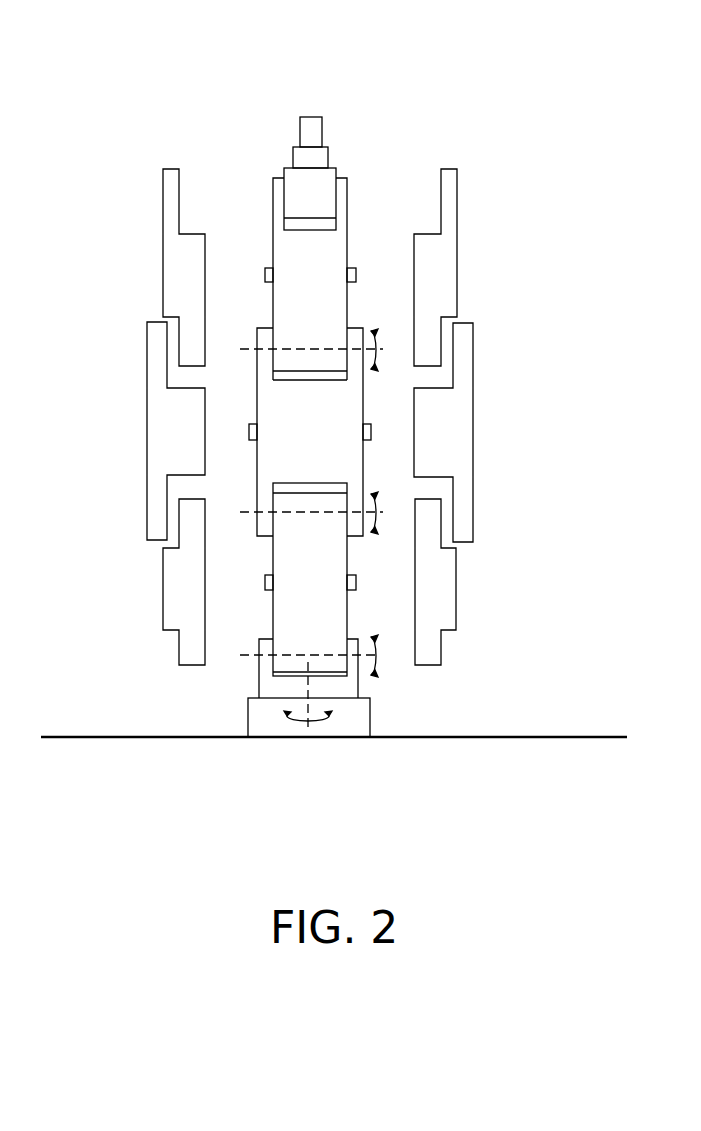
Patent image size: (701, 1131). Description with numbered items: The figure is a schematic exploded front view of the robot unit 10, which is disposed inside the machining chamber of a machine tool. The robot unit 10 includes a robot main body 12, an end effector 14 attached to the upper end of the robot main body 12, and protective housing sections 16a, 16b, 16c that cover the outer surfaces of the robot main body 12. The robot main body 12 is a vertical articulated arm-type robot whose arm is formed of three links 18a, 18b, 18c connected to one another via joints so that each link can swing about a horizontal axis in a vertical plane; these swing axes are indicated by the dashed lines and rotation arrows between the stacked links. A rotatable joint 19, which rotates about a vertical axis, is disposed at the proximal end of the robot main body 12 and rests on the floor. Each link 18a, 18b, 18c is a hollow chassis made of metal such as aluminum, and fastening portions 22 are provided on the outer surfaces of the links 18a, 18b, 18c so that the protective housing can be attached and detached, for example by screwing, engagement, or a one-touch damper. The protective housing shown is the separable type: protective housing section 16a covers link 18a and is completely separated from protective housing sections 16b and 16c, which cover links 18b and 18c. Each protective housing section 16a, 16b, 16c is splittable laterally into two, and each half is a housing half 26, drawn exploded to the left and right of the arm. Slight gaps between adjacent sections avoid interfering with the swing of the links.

The robot unit 10 is at (383, 93).
The robot main body 12 is at (275, 158).
The end effector 14 is at (323, 153).
The protective housing section 16a is at (164, 254).
The protective housing section 16b is at (150, 409).
The protective housing section 16c is at (177, 596).
The link 18a is at (275, 309).
The link 18b is at (353, 463).
The link 18c is at (338, 612).
The rotatable joint 19 is at (270, 690).
The fastening portions 22 is at (265, 275).
The housing half 26 is at (309, 417).